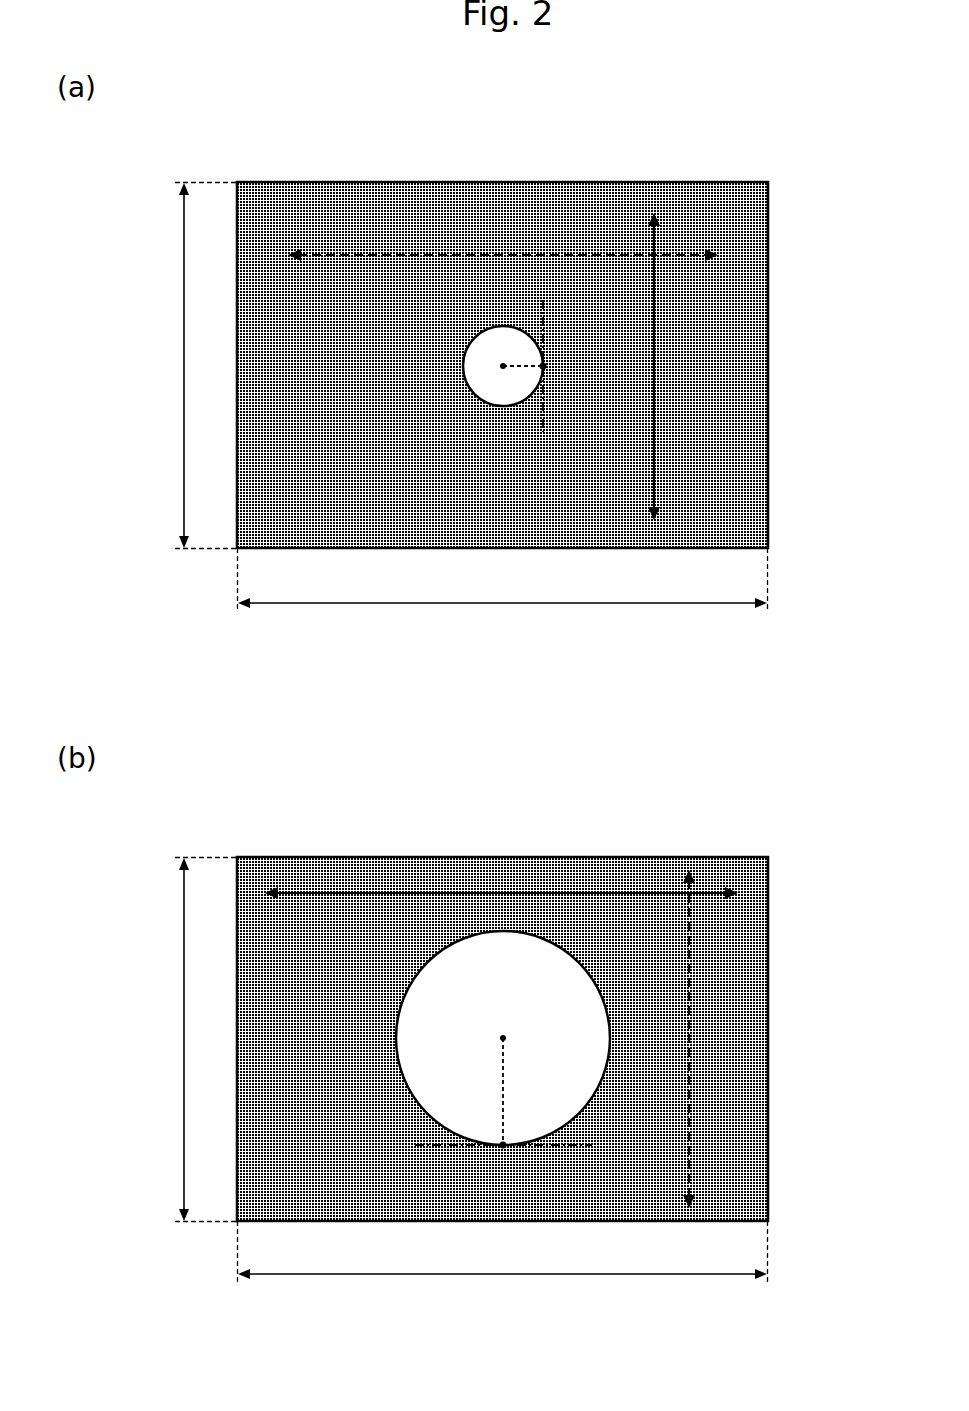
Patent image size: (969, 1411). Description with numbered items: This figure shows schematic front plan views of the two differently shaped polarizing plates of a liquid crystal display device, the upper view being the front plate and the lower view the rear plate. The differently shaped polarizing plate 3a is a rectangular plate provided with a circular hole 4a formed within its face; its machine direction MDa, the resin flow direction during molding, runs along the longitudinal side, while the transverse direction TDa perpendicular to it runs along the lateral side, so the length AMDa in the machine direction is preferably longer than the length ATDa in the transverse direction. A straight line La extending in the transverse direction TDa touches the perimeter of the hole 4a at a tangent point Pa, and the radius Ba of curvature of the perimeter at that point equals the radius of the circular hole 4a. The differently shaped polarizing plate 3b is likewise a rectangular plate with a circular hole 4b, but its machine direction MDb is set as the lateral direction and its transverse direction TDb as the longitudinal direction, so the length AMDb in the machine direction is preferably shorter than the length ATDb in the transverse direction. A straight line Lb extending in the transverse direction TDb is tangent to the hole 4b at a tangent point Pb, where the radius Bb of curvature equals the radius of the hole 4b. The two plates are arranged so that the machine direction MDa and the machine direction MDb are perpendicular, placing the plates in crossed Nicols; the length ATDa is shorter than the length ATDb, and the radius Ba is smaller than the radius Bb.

The differently shaped polarizing plate 3a is at (745, 195).
The hole 4a is at (487, 345).
The machine direction MDa is at (352, 255).
The transverse direction TDa is at (655, 318).
The radius of curvature Ba is at (523, 365).
The straight line La is at (543, 410).
The tangent point Pa is at (564, 370).
The length in transverse direction ATDa is at (169, 366).
The length in machine direction AMDa is at (503, 602).
The differently shaped polarizing plate 3b is at (745, 865).
The hole 4b is at (472, 958).
The transverse direction TDb is at (352, 893).
The machine direction MDb is at (690, 980).
The radius of curvature Bb is at (503, 1078).
The straight line Lb is at (575, 1145).
The tangent point Pb is at (504, 1164).
The length in machine direction AMDb is at (168, 1040).
The length in transverse direction ATDb is at (503, 1273).